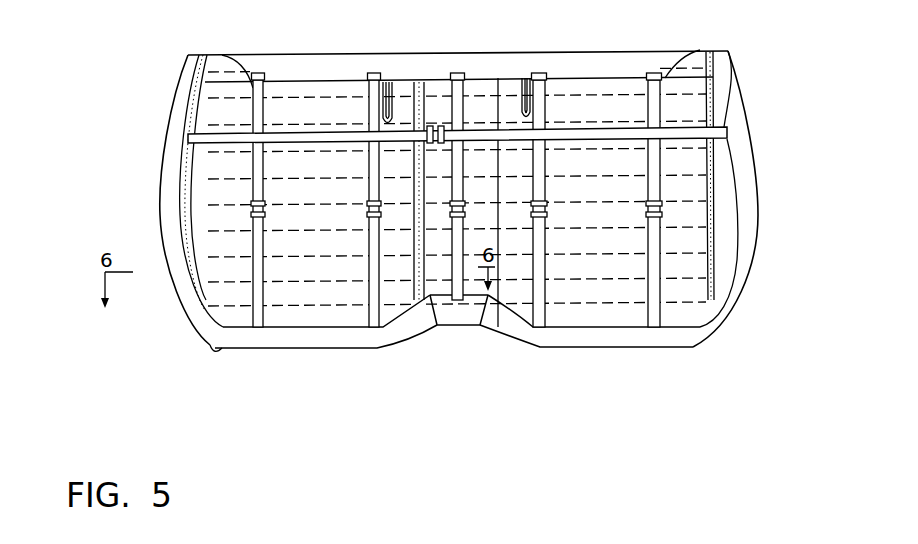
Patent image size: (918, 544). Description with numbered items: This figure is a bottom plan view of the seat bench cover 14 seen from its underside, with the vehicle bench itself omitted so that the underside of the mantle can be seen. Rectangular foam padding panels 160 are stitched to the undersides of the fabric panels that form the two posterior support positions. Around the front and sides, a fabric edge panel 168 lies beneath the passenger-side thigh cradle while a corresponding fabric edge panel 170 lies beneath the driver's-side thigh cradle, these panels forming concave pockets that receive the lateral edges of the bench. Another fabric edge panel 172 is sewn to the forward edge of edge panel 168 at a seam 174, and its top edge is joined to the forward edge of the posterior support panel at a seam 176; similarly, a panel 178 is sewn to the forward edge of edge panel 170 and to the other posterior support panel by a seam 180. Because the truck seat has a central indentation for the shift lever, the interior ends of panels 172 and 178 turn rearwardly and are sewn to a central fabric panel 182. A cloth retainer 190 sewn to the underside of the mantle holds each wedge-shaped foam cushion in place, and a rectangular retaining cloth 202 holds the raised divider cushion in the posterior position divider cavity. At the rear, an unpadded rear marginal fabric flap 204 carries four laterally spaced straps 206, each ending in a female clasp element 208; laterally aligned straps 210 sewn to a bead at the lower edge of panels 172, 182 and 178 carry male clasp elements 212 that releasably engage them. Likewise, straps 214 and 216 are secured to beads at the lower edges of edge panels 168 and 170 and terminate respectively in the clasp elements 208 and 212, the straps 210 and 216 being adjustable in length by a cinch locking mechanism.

The seat bench cover 14 is at (756, 300).
The rectangular foam padding panels 160 is at (335, 293).
The fabric edge panel 168 is at (738, 157).
The fabric edge panel 170 is at (193, 315).
The fabric edge panel 172 is at (555, 338).
The seam 174 is at (212, 350).
The seam 176 is at (243, 349).
The fabric panel 178 is at (292, 338).
The seam 180 is at (597, 348).
The fabric panel 182 is at (475, 317).
The cloth retainer 190 is at (190, 230).
The rectangular retaining cloth 202 is at (442, 298).
The rear marginal fabric flap 204 is at (410, 72).
The straps 206 is at (253, 92).
The female clasp element 208 is at (252, 207).
The straps 210 is at (257, 250).
The male clasp element 212 is at (251, 217).
The straps 214 is at (608, 130).
The straps 216 is at (293, 100).